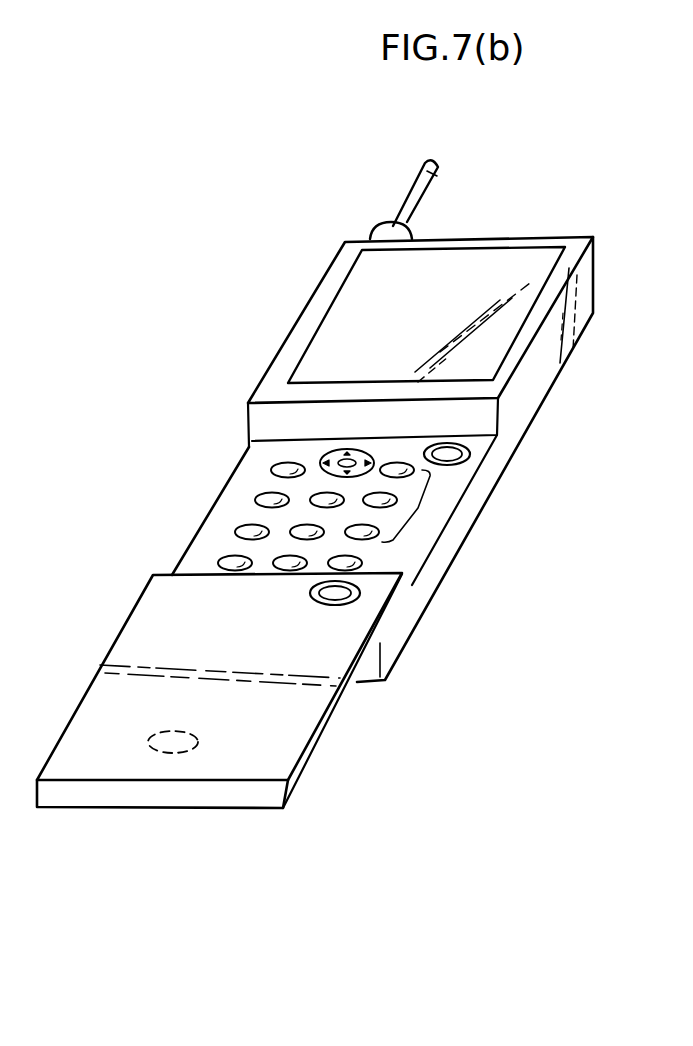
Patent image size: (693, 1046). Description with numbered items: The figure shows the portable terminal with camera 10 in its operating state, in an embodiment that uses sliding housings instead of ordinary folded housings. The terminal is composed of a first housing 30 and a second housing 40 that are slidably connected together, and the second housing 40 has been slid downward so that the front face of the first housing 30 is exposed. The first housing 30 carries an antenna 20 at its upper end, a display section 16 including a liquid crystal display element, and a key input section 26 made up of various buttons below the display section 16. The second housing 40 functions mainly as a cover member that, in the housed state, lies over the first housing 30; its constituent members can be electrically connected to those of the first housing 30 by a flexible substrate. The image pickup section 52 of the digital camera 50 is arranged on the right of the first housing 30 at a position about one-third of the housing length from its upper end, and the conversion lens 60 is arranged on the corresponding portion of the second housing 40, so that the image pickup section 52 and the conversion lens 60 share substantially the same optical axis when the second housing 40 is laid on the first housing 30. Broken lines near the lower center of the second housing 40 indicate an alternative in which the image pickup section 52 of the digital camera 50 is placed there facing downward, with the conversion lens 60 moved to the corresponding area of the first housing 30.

The portable terminal with camera 10 is at (553, 207).
The display section 16 is at (358, 317).
The antenna 20 is at (420, 207).
The key input section 26 is at (418, 508).
The first housing 30 is at (550, 393).
The second housing 40 is at (297, 770).
The digital camera 50 is at (163, 753).
The image pickup section 52 is at (470, 457).
The conversion lens 60 is at (313, 590).